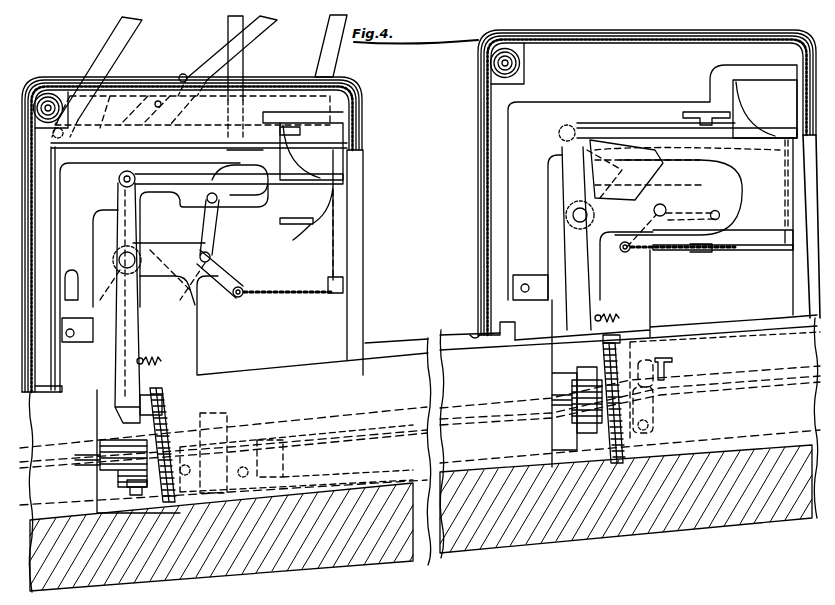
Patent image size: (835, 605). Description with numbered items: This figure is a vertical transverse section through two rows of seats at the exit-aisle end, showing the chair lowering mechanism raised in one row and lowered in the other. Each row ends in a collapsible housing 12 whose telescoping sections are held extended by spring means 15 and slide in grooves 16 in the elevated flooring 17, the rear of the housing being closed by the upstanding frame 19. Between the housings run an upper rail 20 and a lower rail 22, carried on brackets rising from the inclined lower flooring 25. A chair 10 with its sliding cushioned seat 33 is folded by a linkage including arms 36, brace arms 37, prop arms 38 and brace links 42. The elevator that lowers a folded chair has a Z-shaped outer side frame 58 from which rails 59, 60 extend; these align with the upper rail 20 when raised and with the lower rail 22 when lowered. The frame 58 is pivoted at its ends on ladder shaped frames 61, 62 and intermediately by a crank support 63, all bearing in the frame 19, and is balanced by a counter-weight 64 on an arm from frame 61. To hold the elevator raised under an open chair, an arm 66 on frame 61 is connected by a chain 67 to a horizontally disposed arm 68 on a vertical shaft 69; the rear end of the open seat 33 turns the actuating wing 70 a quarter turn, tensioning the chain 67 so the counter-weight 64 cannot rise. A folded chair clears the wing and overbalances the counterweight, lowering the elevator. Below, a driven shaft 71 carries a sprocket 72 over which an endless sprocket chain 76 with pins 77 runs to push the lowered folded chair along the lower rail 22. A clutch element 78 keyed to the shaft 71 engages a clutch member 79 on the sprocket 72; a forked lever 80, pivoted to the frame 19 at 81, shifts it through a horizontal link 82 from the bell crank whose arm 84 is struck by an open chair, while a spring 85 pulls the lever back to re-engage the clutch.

The chair 10 is at (103, 39).
The collapsible housing 12 is at (352, 79).
The spring means 15 is at (63, 110).
The grooves 16 is at (363, 160).
The elevated flooring 17 is at (413, 330).
The upstanding frame 19 is at (364, 268).
The upper rail 20 is at (710, 108).
The lower rail 22 is at (346, 206).
The lower flooring 25 is at (283, 553).
The sliding cushioned seat 33 is at (274, 126).
The arms 36 is at (181, 77).
The brace arms 37 is at (225, 44).
The prop arms 38 is at (245, 57).
The brace links 42 is at (143, 27).
The Z-shaped outer side frame 58 is at (199, 328).
The elevator rail 59 is at (218, 163).
The elevator rail 60 is at (680, 358).
The ladder shaped frame 61 is at (218, 222).
The ladder shaped frame 62 is at (213, 450).
The crank support 63 is at (70, 287).
The counter-weight 64 is at (140, 300).
The arm 66 is at (228, 293).
The chain 67 is at (284, 297).
The horizontally disposed arm 68 is at (761, 251).
The vertical shaft 69 is at (788, 238).
The actuating wing 70 is at (738, 97).
The driven shaft 71 is at (558, 401).
The sprocket 72 is at (167, 504).
The endless sprocket chain 76 is at (170, 393).
The pins 77 is at (147, 495).
The clutch element 78 is at (113, 425).
The clutch member 79 is at (167, 410).
The forked lever 80 is at (123, 390).
The pivot 81 is at (118, 258).
The horizontal link 82 is at (283, 184).
The arm 84 is at (338, 138).
The spring 85 is at (157, 370).